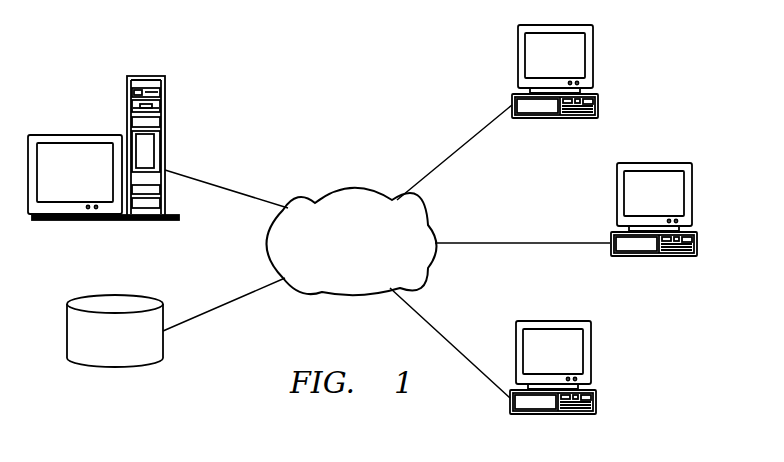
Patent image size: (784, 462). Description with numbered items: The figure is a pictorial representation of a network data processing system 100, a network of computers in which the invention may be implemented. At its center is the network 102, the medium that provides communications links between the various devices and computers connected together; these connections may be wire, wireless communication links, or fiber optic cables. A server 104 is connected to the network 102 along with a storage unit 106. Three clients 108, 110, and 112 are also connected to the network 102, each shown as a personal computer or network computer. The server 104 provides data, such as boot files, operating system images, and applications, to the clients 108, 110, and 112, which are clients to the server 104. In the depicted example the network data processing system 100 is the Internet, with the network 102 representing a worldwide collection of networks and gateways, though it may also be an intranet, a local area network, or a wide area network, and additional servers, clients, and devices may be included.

The network data processing system 100 is at (241, 60).
The network 102 is at (369, 268).
The server 104 is at (127, 98).
The storage unit 106 is at (67, 330).
The client 108 is at (593, 63).
The client 110 is at (692, 200).
The client 112 is at (592, 357).